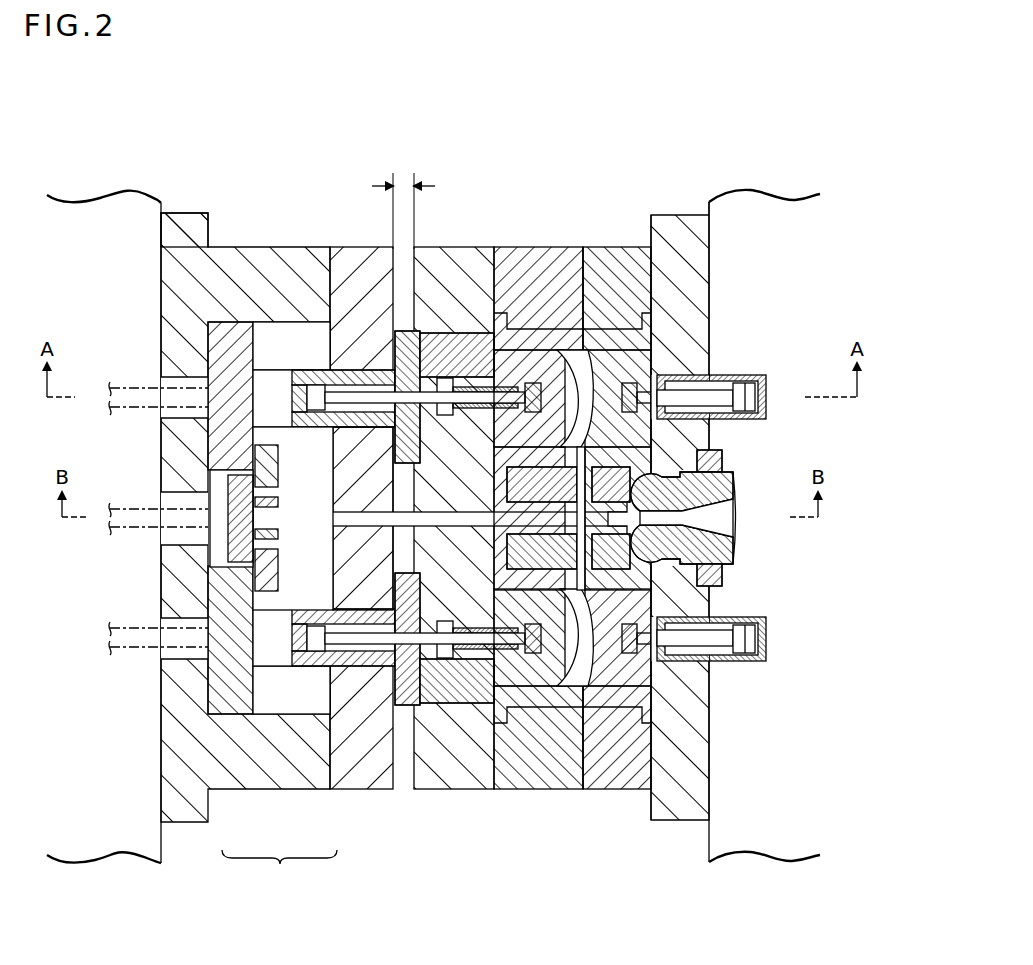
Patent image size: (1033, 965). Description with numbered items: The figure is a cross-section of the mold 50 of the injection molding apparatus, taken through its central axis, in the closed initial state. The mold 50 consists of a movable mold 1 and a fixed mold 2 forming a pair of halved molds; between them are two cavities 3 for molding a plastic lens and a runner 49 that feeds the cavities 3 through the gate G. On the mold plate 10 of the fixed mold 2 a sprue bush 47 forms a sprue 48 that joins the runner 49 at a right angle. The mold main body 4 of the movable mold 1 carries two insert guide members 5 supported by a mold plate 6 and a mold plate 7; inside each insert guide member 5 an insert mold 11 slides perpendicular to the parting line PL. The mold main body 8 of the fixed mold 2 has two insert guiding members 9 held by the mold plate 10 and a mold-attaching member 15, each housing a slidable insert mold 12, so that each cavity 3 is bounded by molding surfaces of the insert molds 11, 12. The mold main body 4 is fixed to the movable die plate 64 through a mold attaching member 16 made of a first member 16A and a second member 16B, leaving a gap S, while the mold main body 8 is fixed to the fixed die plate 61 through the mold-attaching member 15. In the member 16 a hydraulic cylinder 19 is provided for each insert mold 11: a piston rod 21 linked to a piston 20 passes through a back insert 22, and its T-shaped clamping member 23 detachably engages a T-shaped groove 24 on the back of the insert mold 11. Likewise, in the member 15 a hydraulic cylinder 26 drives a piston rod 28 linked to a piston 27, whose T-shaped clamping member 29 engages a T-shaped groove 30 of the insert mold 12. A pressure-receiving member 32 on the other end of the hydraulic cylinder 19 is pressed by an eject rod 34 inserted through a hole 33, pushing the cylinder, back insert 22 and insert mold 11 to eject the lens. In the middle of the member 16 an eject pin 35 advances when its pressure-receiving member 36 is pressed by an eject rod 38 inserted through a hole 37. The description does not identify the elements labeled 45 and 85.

The movable mold 1 is at (415, 872).
The fixed mold 2 is at (650, 884).
The cavity 3 is at (652, 325).
The mold main body 4 is at (510, 770).
The insert guide member 5 is at (512, 343).
The mold plate 6 is at (535, 765).
The mold plate 7 is at (428, 775).
The mold main body 8 is at (640, 760).
The insert guiding member 9 is at (622, 340).
The mold plate 10 is at (612, 770).
The insert mold 11 is at (553, 372).
The insert mold 12 is at (600, 330).
The mold-attaching member 15 is at (709, 778).
The mold attaching member 16 is at (279, 867).
The first member 16A is at (257, 780).
The second member 16B is at (355, 780).
The hydraulic cylinder 19 is at (330, 430).
The piston 20 is at (313, 388).
The piston rod 21 is at (340, 392).
The back insert 22 is at (458, 355).
The T-shaped clamping member 23 is at (478, 372).
The T-shaped groove 24 is at (535, 385).
The hydraulic cylinder 26 is at (760, 393).
The piston 27 is at (745, 403).
The piston rod 28 is at (768, 378).
The T-shaped clamping member 29 is at (640, 372).
The T-shaped groove 30 is at (651, 336).
The pressure-receiving member 32 is at (215, 330).
The hole 33 is at (205, 356).
The eject rod 34 is at (108, 390).
The eject pin 35 is at (305, 485).
The pressure-receiving member 36 is at (240, 500).
The hole 37 is at (250, 556).
The eject rod 38 is at (112, 540).
The nozzle 45 is at (747, 518).
The sprue bush 47 is at (735, 489).
The sprue 48 is at (735, 546).
The runner 49 is at (705, 455).
The mold 50 is at (537, 131).
The fixed die plate 61 is at (709, 200).
The movable die plate 64 is at (172, 212).
The ring 85 is at (722, 471).